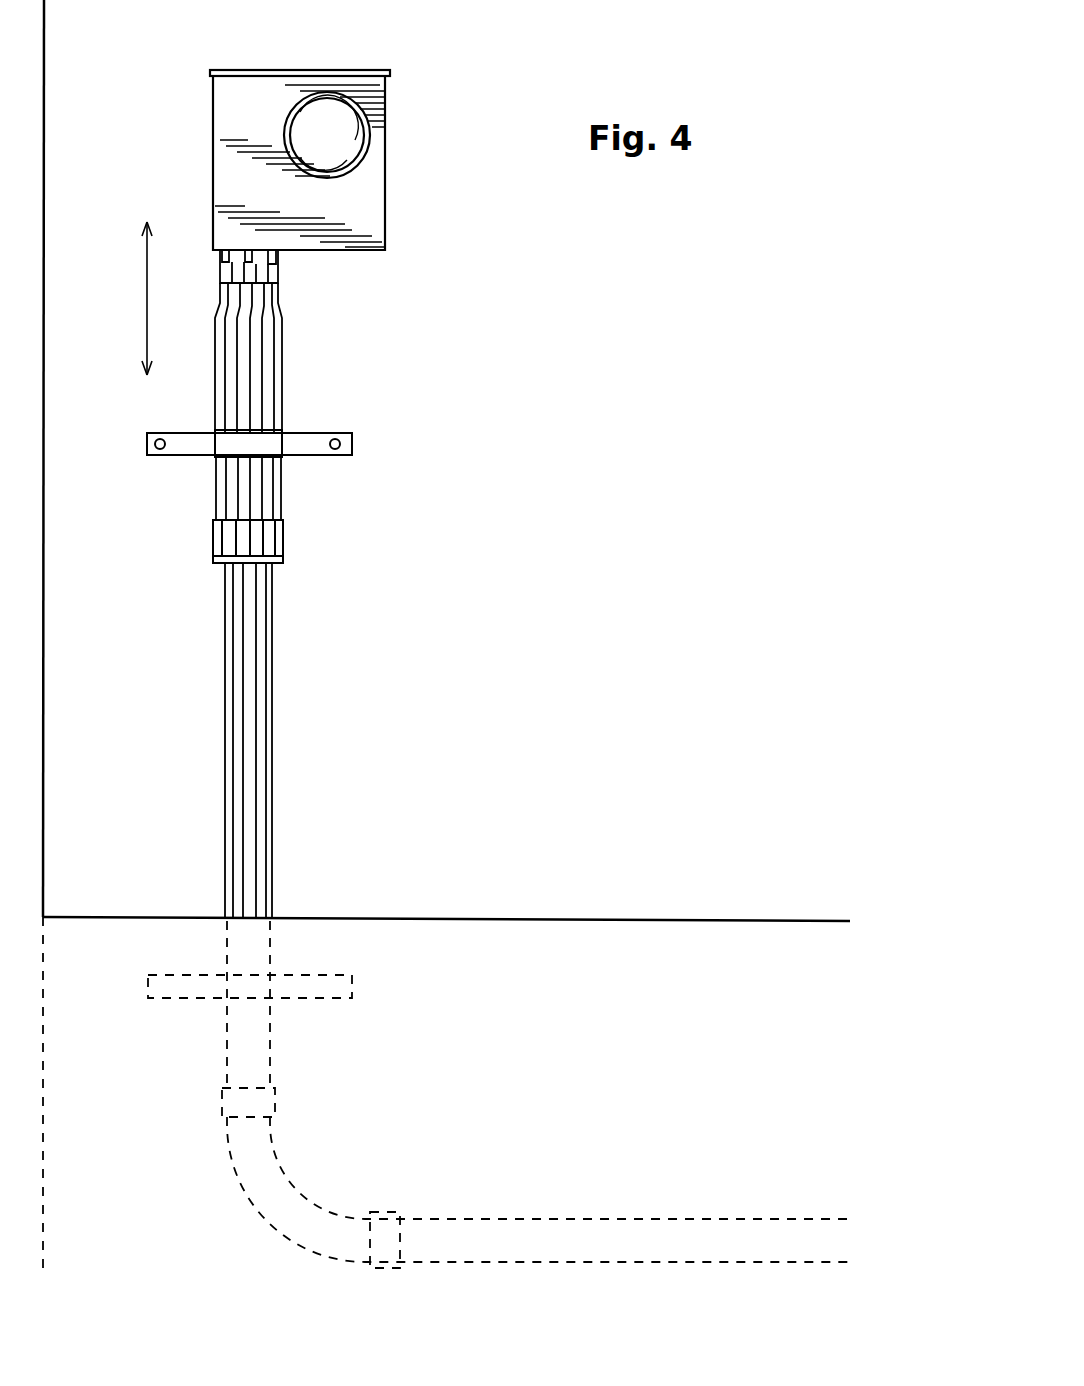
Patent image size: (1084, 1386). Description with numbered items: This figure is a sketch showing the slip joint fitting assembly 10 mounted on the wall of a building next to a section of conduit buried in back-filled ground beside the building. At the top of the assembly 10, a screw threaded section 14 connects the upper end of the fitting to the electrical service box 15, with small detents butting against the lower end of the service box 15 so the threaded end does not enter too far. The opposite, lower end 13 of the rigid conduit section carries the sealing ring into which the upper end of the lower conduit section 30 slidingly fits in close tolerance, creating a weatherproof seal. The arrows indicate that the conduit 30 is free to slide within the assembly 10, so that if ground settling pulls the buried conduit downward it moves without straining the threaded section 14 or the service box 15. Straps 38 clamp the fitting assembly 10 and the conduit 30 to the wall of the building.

The slip joint fitting assembly 10 is at (276, 591).
The lower end 13 is at (212, 264).
The screw threaded section 14 is at (284, 276).
The electrical service box 15 is at (385, 104).
The lower conduit section 30 is at (272, 738).
The straps 38 is at (315, 458).